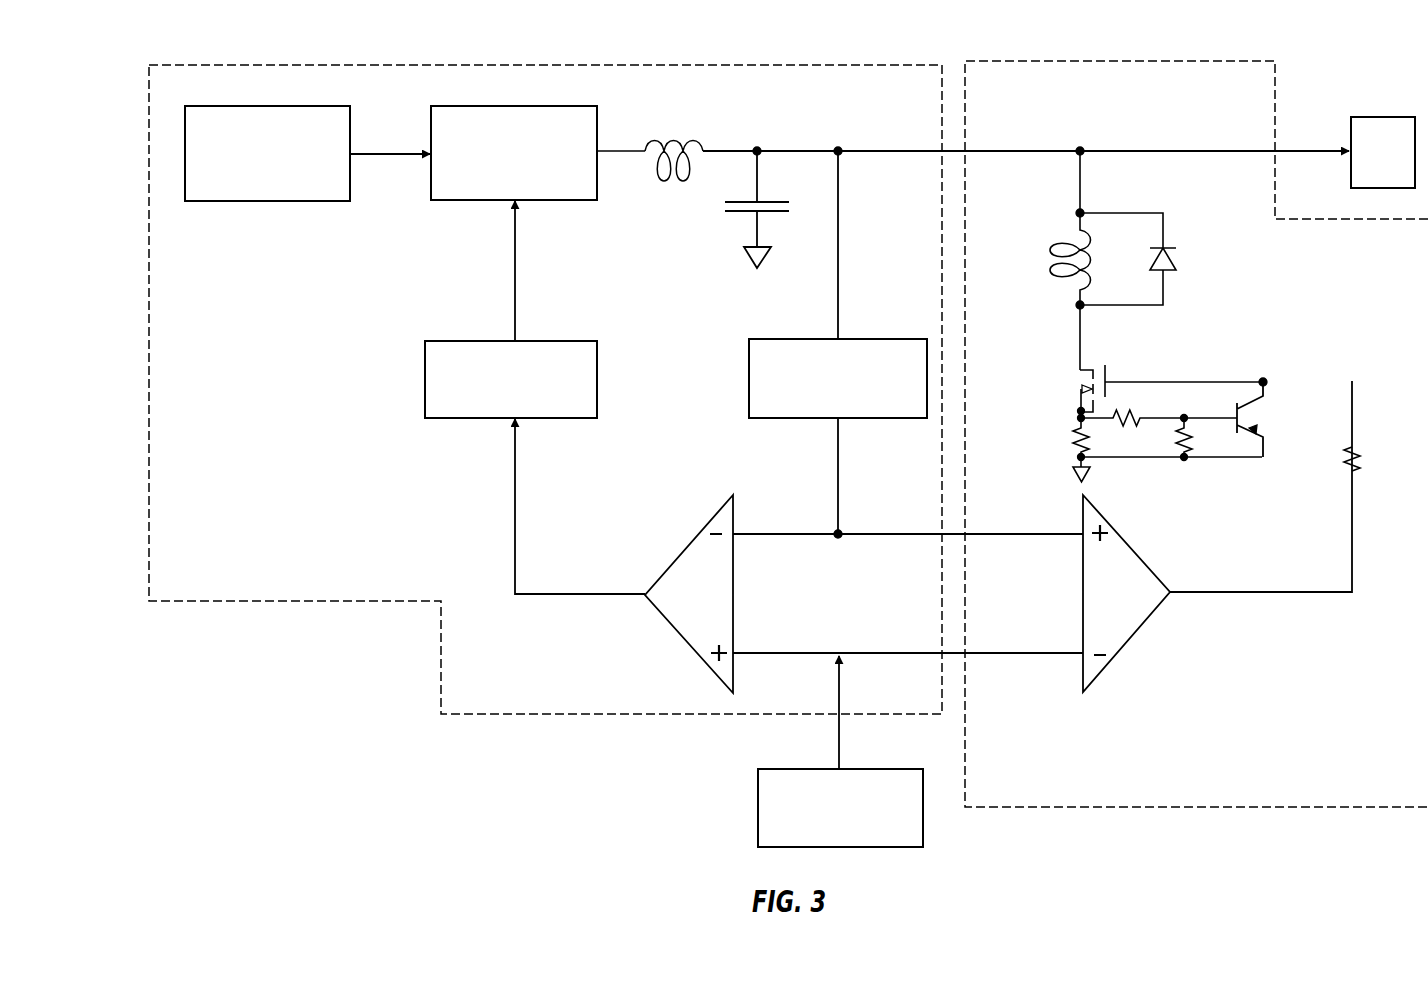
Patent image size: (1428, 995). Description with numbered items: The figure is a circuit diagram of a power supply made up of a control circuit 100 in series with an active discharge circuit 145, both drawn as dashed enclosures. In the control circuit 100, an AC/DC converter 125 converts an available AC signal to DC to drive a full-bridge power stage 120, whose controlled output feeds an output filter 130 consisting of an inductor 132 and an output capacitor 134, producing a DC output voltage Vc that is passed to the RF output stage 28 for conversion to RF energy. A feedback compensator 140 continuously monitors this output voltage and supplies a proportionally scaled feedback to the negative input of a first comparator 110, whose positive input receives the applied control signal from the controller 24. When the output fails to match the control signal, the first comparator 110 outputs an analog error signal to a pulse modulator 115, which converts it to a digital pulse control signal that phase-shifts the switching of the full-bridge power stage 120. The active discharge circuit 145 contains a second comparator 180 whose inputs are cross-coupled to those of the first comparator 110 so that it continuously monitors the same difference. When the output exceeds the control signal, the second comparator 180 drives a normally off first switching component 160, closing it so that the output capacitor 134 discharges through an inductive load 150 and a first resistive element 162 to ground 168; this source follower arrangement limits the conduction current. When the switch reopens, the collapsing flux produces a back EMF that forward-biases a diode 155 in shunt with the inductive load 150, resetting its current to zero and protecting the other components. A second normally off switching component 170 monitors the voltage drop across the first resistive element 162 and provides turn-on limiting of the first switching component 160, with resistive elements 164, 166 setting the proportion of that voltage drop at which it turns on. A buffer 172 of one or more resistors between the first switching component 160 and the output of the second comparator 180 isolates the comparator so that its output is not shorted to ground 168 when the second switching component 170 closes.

The controller 24 is at (825, 823).
The RF output stage 28 is at (1368, 168).
The control circuit 100 is at (556, 718).
The first comparator 110 is at (688, 645).
The pulse modulator 115 is at (478, 340).
The full-bridge power stage 120 is at (516, 105).
The AC/DC converter 125 is at (269, 105).
The output filter 130 is at (700, 181).
The inductor 132 is at (673, 184).
The output capacitor 134 is at (723, 205).
The feedback compensator 140 is at (776, 338).
The active discharge circuit 145 is at (1222, 57).
The inductive load 150 is at (1057, 262).
The diode 155 is at (1172, 252).
The first switching component 160 is at (1100, 365).
The first resistive element 162 is at (1068, 438).
The resistive element 164 is at (1125, 408).
The resistive element 166 is at (1195, 432).
The ground 168 is at (1074, 470).
The second switching component 170 is at (1257, 422).
The buffer 172 is at (1362, 458).
The second comparator 180 is at (1127, 643).